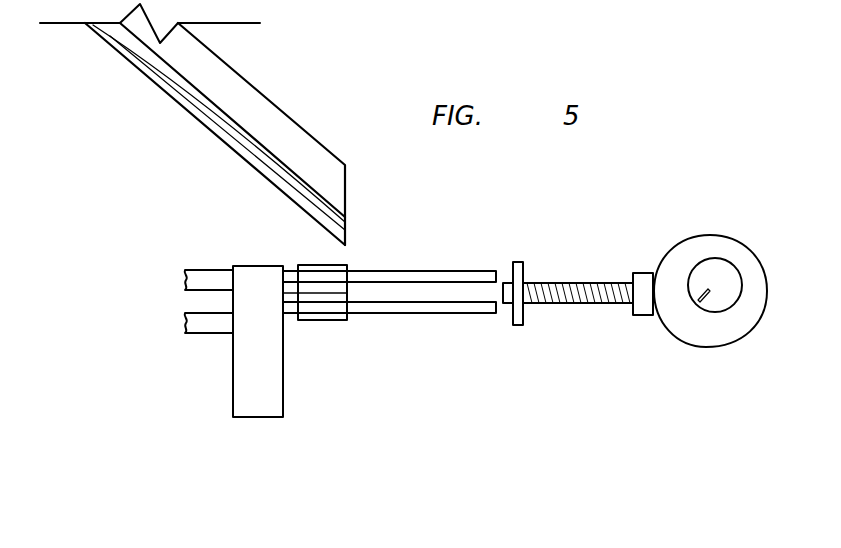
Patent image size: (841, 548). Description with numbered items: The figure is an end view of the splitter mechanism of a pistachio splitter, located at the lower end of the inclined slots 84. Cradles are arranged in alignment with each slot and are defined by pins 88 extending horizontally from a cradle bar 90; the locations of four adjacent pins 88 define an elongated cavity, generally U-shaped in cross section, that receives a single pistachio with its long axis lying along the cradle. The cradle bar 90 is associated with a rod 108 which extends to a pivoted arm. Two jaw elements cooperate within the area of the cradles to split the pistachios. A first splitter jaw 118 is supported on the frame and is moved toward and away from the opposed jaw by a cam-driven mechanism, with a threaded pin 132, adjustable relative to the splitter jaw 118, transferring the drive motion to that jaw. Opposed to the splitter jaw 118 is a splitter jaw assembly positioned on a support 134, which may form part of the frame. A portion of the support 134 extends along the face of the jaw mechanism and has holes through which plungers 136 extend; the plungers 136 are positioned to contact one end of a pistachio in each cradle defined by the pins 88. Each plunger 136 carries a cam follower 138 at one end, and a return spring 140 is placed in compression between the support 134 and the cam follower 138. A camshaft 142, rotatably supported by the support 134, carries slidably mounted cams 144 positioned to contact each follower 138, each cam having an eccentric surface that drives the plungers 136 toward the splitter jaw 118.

The inclined slots 84 is at (263, 110).
The pins 88 is at (405, 272).
The cradle bar 90 is at (255, 266).
The rod 108 is at (207, 333).
The first splitter jaw 118 is at (312, 265).
The threaded pin 132 is at (203, 270).
The support 134 is at (517, 260).
The plungers 136 is at (507, 282).
The cam followers 138 is at (642, 273).
The return spring 140 is at (575, 304).
The camshaft 142 is at (742, 277).
The cams 144 is at (713, 235).